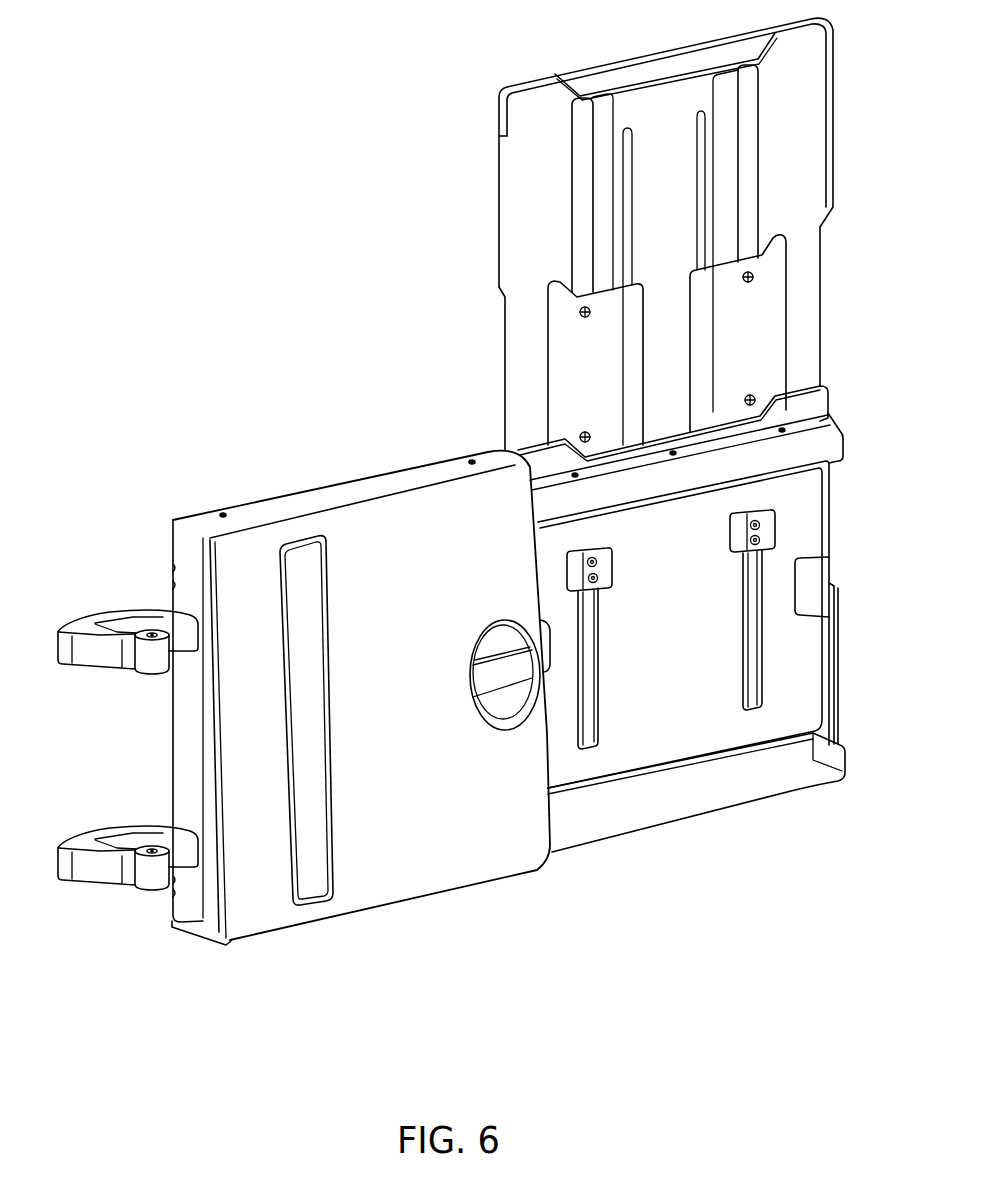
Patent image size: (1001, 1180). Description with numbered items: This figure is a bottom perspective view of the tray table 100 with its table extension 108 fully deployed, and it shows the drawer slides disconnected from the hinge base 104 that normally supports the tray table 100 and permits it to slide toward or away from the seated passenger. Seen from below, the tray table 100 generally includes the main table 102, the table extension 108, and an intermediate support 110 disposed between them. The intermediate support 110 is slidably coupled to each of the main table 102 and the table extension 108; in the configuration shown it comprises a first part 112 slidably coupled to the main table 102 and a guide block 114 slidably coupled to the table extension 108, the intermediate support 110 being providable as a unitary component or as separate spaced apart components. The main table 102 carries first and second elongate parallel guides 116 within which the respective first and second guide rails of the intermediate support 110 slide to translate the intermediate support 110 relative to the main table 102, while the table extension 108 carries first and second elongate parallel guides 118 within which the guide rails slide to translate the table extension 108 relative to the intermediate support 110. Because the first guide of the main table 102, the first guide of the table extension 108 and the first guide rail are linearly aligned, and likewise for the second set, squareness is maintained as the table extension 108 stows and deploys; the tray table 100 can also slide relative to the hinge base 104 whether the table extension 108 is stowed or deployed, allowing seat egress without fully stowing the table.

The tray table 100 is at (399, 301).
The main table 102 is at (836, 720).
The hinge base 104 is at (192, 555).
The table extension 108 is at (506, 113).
The intermediate support 110 is at (760, 311).
The first part 112 is at (763, 377).
The guide block 114 is at (770, 528).
The first and second elongate parallel guides 116 is at (583, 193).
The first and second elongate parallel guides 118 is at (760, 657).